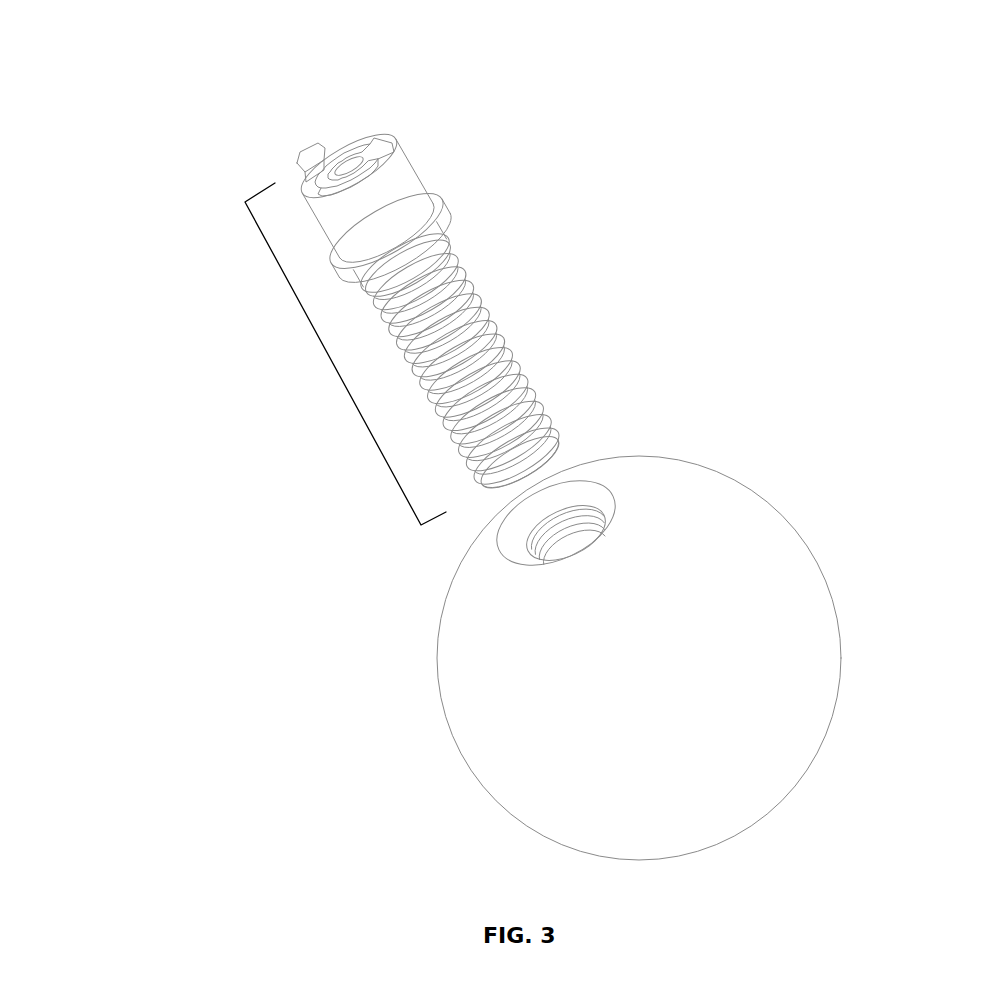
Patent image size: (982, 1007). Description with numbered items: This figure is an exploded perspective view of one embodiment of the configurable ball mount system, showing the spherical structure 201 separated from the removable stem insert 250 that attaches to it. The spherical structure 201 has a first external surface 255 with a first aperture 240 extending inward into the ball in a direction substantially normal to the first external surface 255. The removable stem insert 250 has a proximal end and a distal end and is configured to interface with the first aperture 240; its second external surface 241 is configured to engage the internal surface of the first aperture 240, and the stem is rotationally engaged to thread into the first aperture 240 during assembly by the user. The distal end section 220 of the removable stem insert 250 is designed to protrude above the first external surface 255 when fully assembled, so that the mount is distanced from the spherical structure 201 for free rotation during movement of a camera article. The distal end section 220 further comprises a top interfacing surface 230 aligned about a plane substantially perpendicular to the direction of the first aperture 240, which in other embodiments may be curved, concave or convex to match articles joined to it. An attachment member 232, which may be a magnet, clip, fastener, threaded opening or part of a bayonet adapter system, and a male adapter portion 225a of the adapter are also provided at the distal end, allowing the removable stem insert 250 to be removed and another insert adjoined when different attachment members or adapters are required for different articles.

The spherical structure 201 is at (463, 436).
The distal end section 220 is at (428, 213).
The male adapter portion 225a is at (426, 130).
The top interfacing surface 230 is at (320, 104).
The attachment member 232 is at (429, 104).
The first aperture 240 is at (602, 465).
The second external surface 241 is at (523, 364).
The removable stem insert 250 is at (330, 362).
The first external surface 255 is at (654, 644).